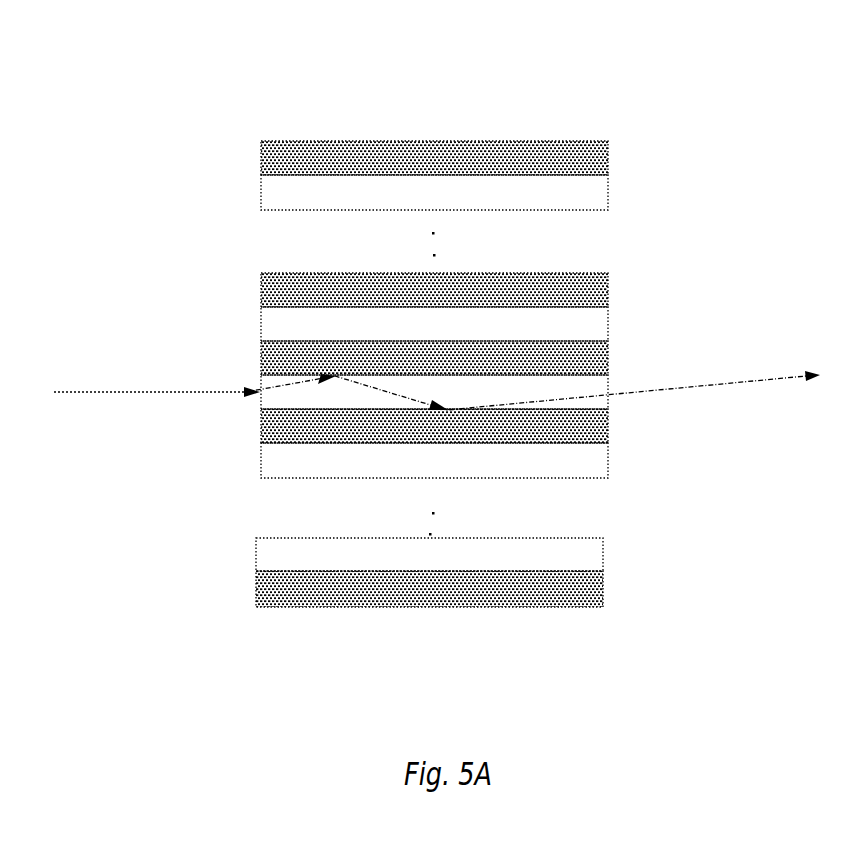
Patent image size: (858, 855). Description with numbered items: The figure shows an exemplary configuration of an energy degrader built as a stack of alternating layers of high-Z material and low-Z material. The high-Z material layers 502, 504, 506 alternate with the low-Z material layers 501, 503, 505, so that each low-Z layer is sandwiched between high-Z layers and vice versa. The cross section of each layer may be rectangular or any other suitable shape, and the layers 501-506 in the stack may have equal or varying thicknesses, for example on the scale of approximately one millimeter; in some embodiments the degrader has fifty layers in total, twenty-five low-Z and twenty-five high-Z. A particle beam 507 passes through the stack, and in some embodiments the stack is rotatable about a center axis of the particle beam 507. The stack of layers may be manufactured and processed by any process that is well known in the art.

The low-Z material layer 501 is at (597, 392).
The high-Z material layer 502 is at (608, 345).
The low-Z material layer 503 is at (608, 320).
The high-Z material layer 504 is at (608, 288).
The low-Z material layer 505 is at (608, 192).
The high-Z material layer 506 is at (608, 157).
The particle beam 507 is at (148, 402).